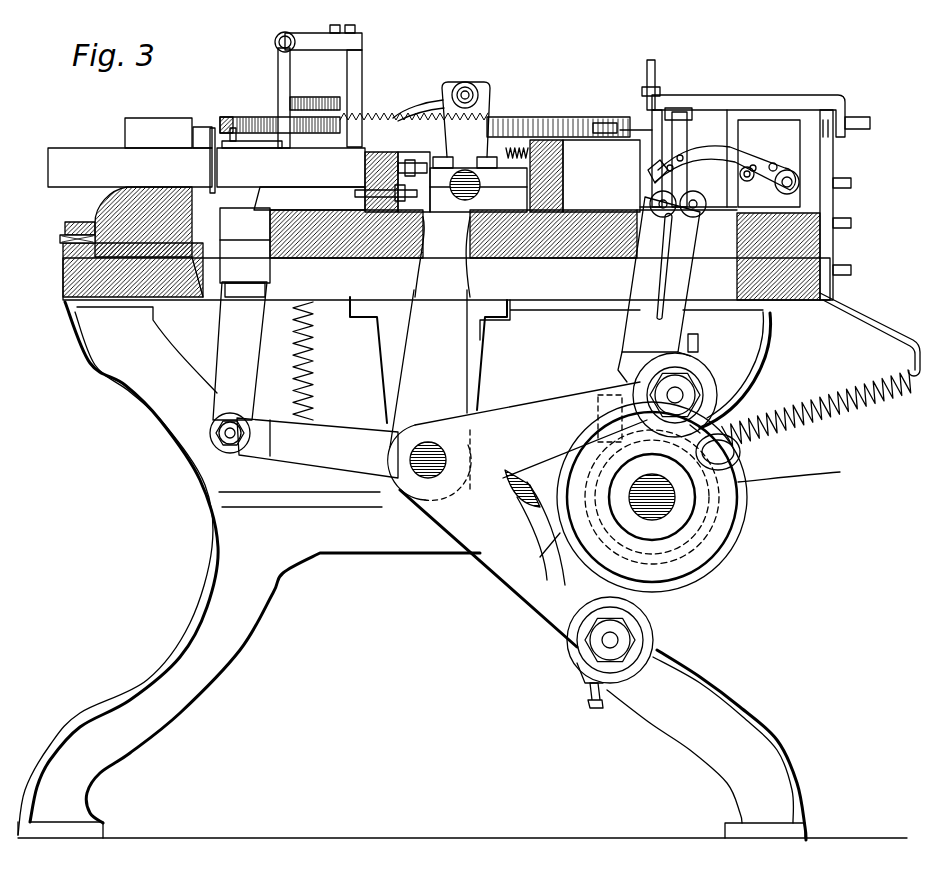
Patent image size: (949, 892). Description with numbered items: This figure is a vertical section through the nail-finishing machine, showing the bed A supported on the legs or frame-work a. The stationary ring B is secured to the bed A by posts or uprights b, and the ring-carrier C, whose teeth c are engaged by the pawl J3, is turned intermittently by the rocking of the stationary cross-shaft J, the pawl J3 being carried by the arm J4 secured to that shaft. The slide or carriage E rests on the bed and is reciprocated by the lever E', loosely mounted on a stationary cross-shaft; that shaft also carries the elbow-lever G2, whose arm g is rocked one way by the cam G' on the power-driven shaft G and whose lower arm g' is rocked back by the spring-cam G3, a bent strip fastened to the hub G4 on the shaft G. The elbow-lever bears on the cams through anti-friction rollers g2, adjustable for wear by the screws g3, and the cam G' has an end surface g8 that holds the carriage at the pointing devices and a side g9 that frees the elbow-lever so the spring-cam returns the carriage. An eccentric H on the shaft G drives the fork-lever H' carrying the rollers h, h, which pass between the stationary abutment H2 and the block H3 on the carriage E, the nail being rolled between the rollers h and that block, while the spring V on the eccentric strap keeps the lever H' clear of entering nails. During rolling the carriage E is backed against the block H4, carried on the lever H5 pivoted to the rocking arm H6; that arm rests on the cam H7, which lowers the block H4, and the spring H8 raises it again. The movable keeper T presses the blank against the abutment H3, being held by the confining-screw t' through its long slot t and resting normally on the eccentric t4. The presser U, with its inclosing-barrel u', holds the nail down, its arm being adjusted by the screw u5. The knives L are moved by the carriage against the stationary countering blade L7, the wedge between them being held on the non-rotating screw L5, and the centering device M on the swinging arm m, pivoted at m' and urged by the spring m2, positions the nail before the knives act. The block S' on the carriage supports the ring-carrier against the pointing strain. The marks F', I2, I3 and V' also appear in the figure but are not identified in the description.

The bed A is at (455, 205).
The legs or frame-work a is at (462, 568).
The stationary ring B is at (197, 127).
The ring-carrier C is at (530, 117).
The teeth c is at (500, 116).
The slide or carriage E is at (453, 249).
The lever E' is at (429, 358).
The pivot pin F' is at (440, 449).
The power-driven shaft G is at (723, 507).
The cam G' is at (674, 497).
The elbow-lever G2 is at (488, 544).
The spring-cam G3 is at (557, 510).
The hub G4 is at (696, 500).
The arm of elbow-lever g is at (518, 436).
The lower arm of elbow-lever g' is at (540, 556).
The anti-friction rollers g2 is at (660, 640).
The screws g3 is at (591, 700).
The end surface of cam g8 is at (718, 560).
The side of cam g9 is at (622, 540).
The eccentric H is at (528, 556).
The fork-lever H' is at (646, 289).
The stationary abutment H2 is at (718, 167).
The abutment or block H3 is at (651, 170).
The block H4 is at (245, 252).
The lever H5 is at (238, 367).
The rocking arm H6 is at (317, 448).
The cam H7 is at (801, 471).
The spring H8 is at (318, 370).
The rollers h is at (652, 200).
The screw I2 is at (413, 162).
The block I3 is at (309, 198).
The stationary cross-shaft J is at (463, 195).
The pawl J3 is at (420, 97).
The arm J4 is at (481, 81).
The knives L is at (323, 180).
The non-rotating screw L5 is at (370, 197).
The countering blade L7 is at (130, 152).
The centering device M is at (241, 145).
The swinging arm m is at (267, 98).
The pivot m' is at (301, 38).
The spring m2 is at (312, 97).
The block S' is at (280, 113).
The movable keeper T is at (712, 150).
The long slot t is at (776, 158).
The confining-screw t' is at (817, 172).
The eccentric t4 is at (741, 178).
The presser U is at (664, 108).
The inclosing-barrel u' is at (657, 80).
The screw u5 is at (870, 124).
The spring V is at (816, 407).
The cover V' is at (786, 222).
The posts or uprights b is at (680, 142).